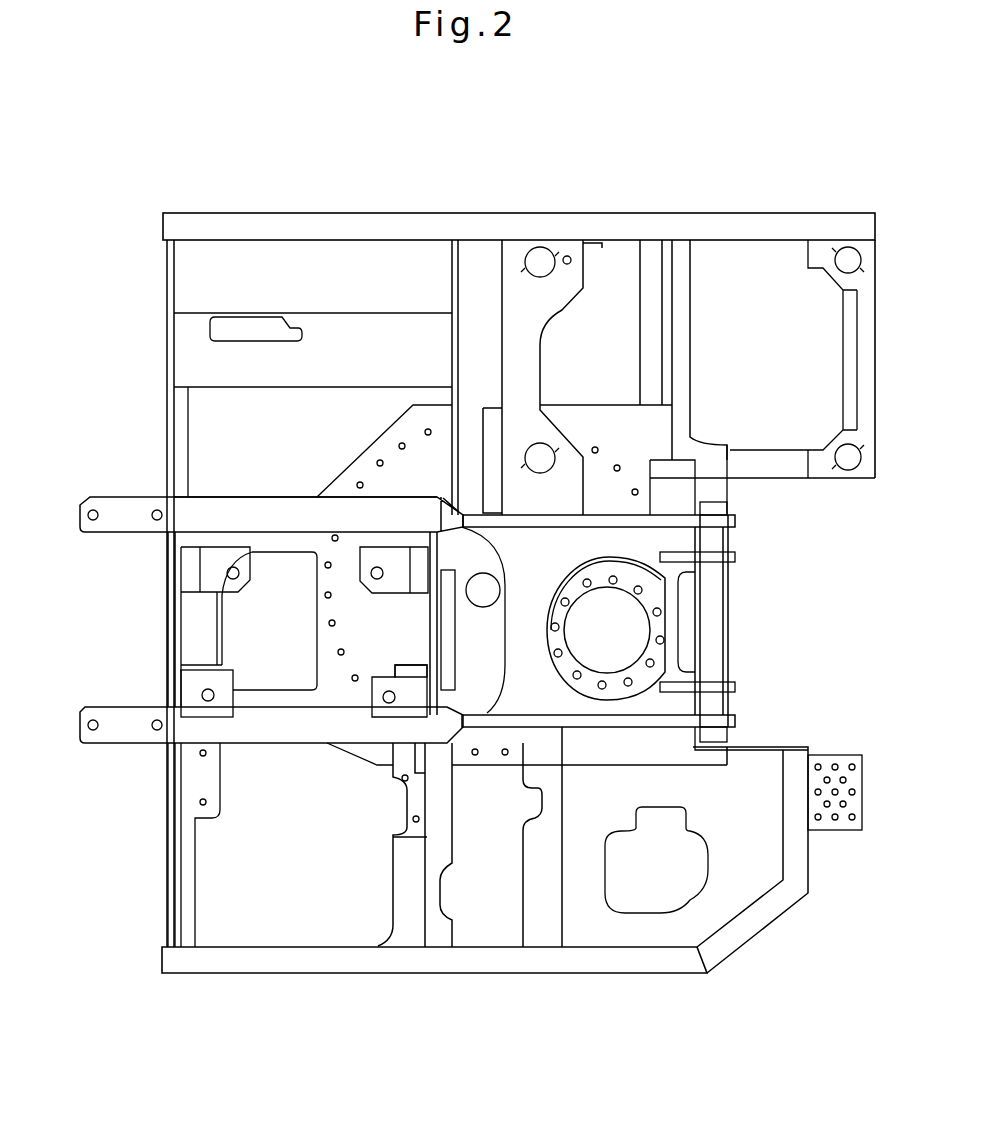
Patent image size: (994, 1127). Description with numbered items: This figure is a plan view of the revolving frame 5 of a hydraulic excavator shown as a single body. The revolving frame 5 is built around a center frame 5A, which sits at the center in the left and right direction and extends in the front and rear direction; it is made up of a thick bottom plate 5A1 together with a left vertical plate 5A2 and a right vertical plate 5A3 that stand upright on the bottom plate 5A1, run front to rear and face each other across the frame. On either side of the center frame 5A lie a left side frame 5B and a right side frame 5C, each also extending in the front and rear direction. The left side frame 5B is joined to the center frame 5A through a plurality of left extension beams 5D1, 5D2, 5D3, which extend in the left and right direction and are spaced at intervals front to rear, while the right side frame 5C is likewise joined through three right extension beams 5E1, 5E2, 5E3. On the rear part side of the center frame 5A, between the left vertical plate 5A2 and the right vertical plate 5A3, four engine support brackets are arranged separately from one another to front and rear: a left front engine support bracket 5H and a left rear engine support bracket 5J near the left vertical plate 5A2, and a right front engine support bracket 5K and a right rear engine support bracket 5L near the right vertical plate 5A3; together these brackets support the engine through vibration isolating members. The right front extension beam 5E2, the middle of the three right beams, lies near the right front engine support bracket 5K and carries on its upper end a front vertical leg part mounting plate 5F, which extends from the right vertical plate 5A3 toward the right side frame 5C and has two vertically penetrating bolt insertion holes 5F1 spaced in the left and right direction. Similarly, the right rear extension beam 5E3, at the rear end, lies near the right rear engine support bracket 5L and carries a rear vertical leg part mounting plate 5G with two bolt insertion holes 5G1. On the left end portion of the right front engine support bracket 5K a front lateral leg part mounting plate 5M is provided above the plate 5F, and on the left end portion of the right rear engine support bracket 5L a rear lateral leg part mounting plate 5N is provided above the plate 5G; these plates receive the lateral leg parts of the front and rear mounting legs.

The revolving frame 5 is at (403, 200).
The center frame 5A is at (733, 608).
The bottom plate 5A1 is at (620, 432).
The left vertical plate 5A2 is at (597, 520).
The right vertical plate 5A3 is at (595, 727).
The left side frame 5B is at (312, 228).
The right side frame 5C is at (293, 960).
The left extension beam 5D1 is at (683, 330).
The left extension beam 5D2 is at (480, 285).
The left extension beam 5D3 is at (167, 405).
The right extension beam 5E1 is at (542, 923).
The right front extension beam 5E2 is at (437, 925).
The right rear extension beam 5E3 is at (167, 873).
The front vertical leg part mounting plate 5F is at (410, 807).
The bolt insertion hole 5F1 is at (421, 818).
The rear vertical leg part mounting plate 5G is at (200, 782).
The bolt insertion hole 5G1 is at (208, 803).
The left front engine support bracket 5H is at (392, 545).
The left rear engine support bracket 5J is at (215, 575).
The right front engine support bracket 5K is at (400, 702).
The right rear engine support bracket 5L is at (195, 690).
The front lateral leg part mounting plate 5M is at (410, 665).
The rear lateral leg part mounting plate 5N is at (200, 663).